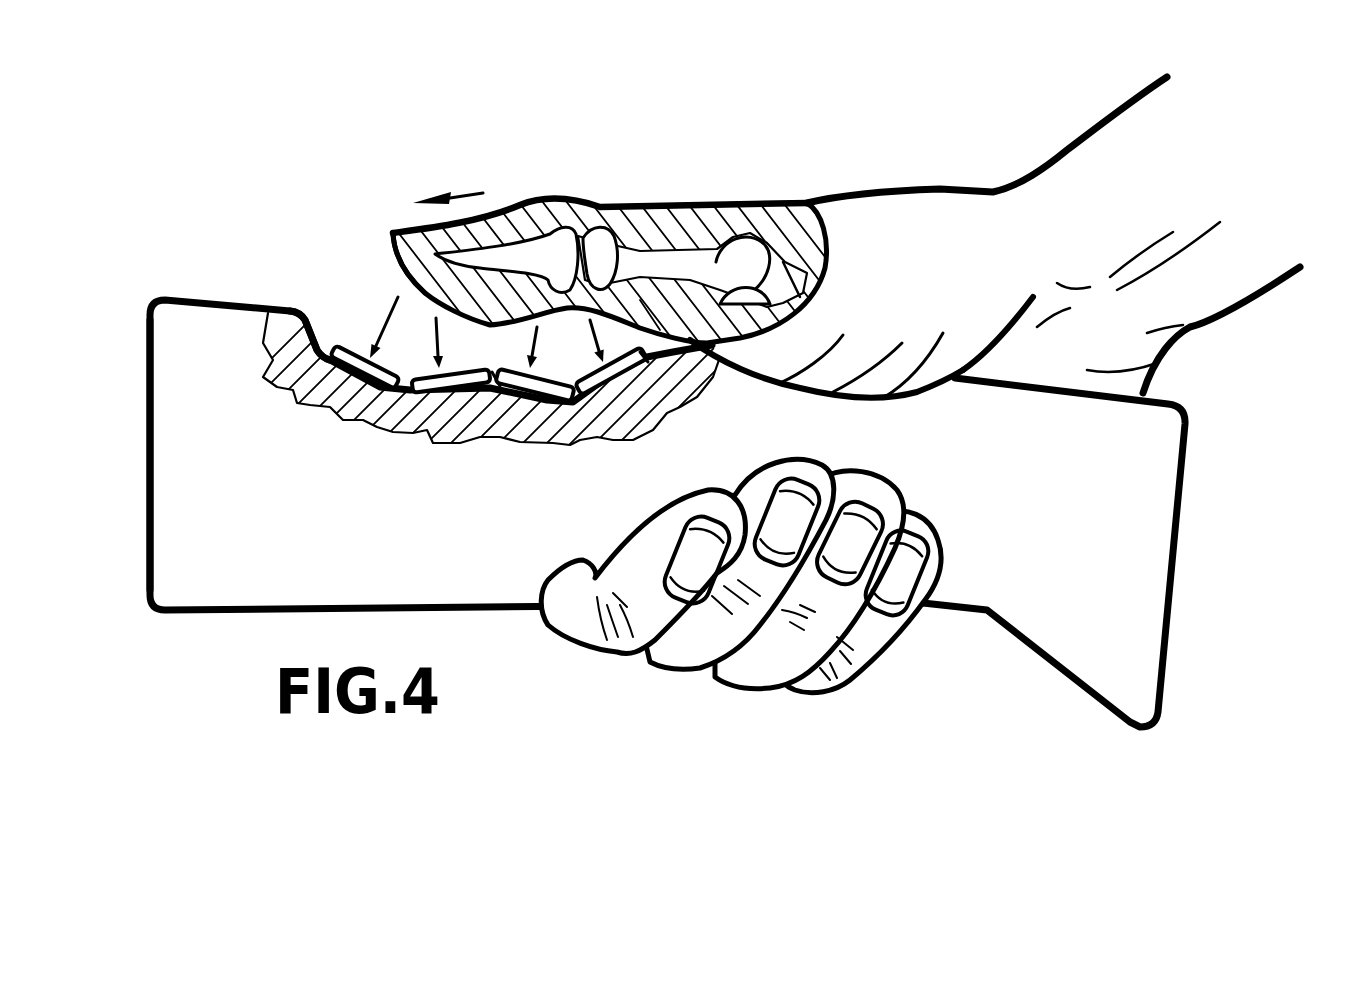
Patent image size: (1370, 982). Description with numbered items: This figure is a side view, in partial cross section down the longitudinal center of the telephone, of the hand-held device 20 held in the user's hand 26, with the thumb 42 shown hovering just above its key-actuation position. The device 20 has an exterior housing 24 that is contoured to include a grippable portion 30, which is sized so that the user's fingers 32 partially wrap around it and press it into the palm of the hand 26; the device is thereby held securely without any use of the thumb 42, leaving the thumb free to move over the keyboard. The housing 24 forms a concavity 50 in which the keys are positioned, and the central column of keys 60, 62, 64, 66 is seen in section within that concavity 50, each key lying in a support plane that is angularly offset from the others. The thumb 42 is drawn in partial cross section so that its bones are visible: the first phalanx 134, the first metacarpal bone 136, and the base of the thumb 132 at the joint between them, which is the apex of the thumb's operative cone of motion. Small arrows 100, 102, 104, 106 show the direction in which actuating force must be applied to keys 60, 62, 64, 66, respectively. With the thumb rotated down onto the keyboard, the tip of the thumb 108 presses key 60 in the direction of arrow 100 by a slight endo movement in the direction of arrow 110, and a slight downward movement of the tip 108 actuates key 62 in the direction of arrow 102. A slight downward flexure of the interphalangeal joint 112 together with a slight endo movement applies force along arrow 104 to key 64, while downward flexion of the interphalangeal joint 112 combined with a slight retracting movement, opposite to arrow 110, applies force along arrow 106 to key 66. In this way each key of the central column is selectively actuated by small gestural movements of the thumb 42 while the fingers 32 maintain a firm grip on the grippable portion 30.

The hand-held device 20 is at (150, 285).
The exterior housing 24 is at (178, 482).
The hand 26 is at (1087, 173).
The grippable portion 30 is at (757, 541).
The fingers 32 is at (680, 650).
The thumb 42 is at (705, 204).
The concavity 50 is at (327, 335).
The key 60 is at (312, 398).
The key 62 is at (448, 395).
The key 64 is at (553, 394).
The key 66 is at (613, 392).
The arrow 100 is at (390, 332).
The arrow 102 is at (382, 396).
The arrow 104 is at (503, 370).
The arrow 106 is at (640, 358).
The tip of the thumb 108 is at (395, 278).
The arrow 110 is at (462, 193).
The interphalangeal joint 112 is at (600, 230).
The base of the thumb 132 is at (777, 240).
The first phalanx 134 is at (660, 232).
The first metacarpal bone 136 is at (823, 272).